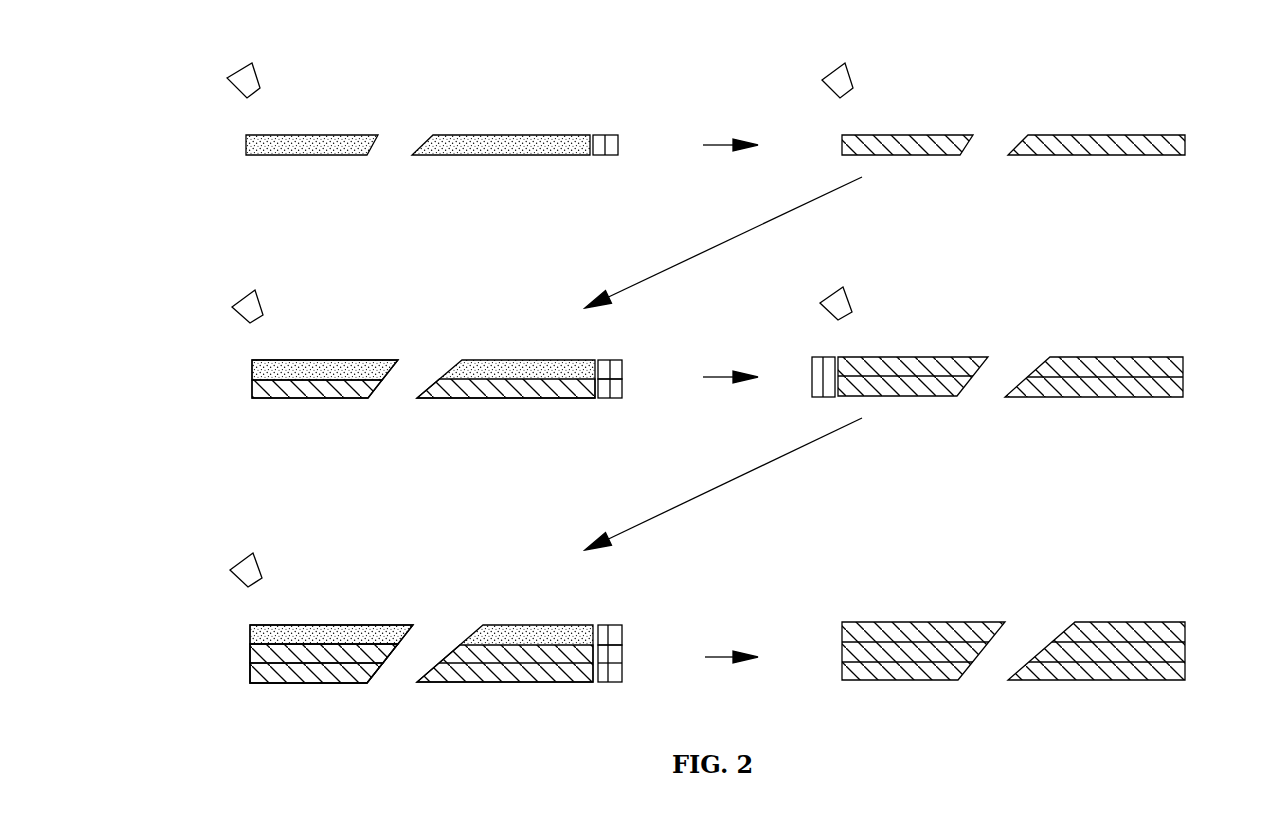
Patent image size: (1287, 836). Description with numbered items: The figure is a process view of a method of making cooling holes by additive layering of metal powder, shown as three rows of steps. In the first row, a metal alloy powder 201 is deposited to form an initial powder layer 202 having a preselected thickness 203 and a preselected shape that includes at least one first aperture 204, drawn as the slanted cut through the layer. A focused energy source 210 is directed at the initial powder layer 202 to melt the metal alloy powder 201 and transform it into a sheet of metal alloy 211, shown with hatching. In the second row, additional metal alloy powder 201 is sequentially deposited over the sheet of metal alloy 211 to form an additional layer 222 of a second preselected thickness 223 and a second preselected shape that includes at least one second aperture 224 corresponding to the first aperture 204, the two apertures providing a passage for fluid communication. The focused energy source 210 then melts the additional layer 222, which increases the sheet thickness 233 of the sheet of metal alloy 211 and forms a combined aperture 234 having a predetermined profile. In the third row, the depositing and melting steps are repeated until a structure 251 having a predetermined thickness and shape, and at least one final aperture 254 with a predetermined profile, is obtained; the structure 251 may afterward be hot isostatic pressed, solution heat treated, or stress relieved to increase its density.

The metal alloy powder 201 is at (303, 153).
The initial powder layer 202 is at (246, 145).
The preselected thickness 203 is at (606, 145).
The first aperture 204 is at (409, 132).
The focused energy source 210 is at (257, 75).
The sheet of metal alloy 211 is at (842, 143).
The additional layer 222 is at (252, 368).
The second preselected thickness 223 is at (613, 370).
The second aperture 224 is at (430, 352).
The sheet thickness 233 is at (820, 377).
The combined aperture 234 is at (1017, 352).
The structure 251 is at (842, 652).
The final aperture 254 is at (1042, 613).